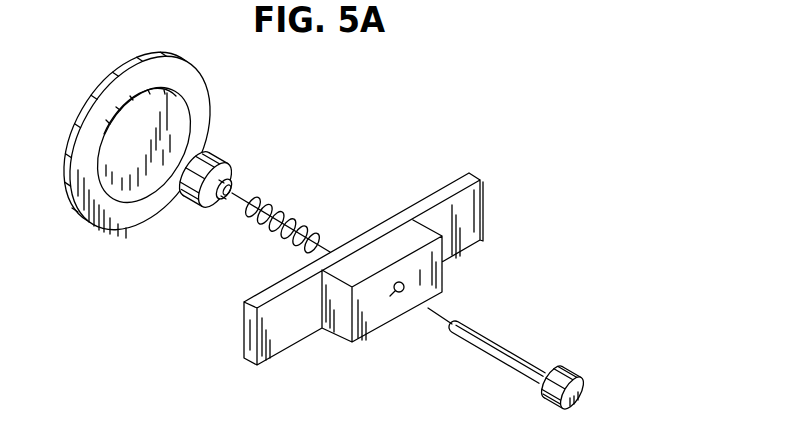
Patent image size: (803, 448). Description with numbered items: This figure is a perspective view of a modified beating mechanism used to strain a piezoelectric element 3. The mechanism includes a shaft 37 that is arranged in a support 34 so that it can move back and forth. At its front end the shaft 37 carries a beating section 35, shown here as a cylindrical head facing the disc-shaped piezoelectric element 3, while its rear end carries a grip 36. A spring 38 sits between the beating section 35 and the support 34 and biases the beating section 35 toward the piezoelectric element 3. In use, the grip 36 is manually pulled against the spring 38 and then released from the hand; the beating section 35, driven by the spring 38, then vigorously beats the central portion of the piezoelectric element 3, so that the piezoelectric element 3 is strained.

The piezoelectric element 3 is at (173, 117).
The beating section 35 is at (222, 157).
The spring 38 is at (275, 232).
The support 34 is at (442, 277).
The shaft 37 is at (517, 352).
The grip 36 is at (582, 393).